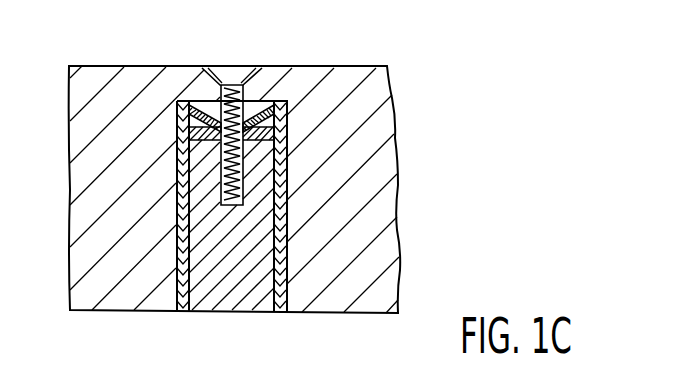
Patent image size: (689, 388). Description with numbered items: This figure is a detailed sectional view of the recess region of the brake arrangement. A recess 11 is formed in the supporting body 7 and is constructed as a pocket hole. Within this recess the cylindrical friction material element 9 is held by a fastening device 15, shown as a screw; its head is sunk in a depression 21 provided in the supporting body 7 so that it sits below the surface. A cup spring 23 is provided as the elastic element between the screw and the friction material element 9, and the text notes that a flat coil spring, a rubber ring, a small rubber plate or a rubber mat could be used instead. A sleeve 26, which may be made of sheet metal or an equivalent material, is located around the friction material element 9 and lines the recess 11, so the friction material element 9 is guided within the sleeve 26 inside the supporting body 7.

The supporting body 7 is at (375, 170).
The friction material element 9 is at (233, 280).
The recess 11 is at (286, 256).
The fastening device 15 is at (231, 78).
The depression 21 is at (260, 74).
The cup spring 23 is at (198, 108).
The sleeve 26 is at (287, 205).